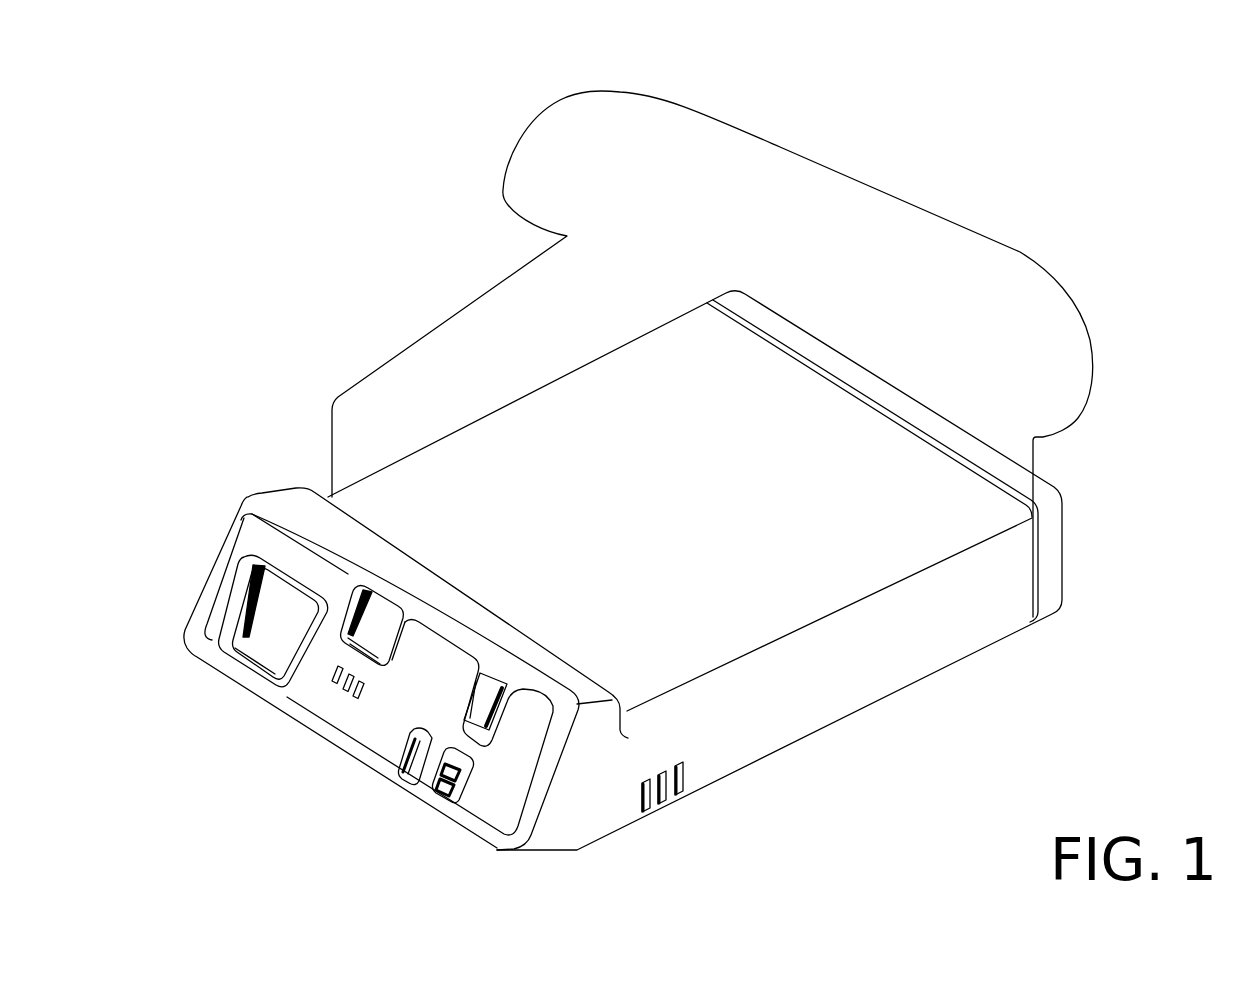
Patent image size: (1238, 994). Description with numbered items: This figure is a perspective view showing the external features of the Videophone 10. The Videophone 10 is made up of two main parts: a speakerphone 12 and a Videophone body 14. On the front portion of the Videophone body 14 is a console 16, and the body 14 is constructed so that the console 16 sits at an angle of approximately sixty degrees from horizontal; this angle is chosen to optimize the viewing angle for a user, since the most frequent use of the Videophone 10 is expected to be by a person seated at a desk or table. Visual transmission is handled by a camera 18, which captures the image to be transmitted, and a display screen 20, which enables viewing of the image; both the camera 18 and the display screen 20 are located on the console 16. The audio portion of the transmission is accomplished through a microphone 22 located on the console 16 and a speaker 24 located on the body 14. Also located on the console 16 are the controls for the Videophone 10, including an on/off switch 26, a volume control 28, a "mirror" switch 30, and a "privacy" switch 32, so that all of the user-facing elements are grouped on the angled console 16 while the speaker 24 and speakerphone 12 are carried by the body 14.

The Videophone 10 is at (874, 127).
The speakerphone 12 is at (397, 397).
The Videophone body 14 is at (990, 623).
The console 16 is at (212, 660).
The camera 18 is at (370, 628).
The display screen 20 is at (272, 618).
The microphone 22 is at (343, 688).
The speaker 24 is at (653, 805).
The on/off switch 26 is at (487, 700).
The volume control 28 is at (403, 773).
The mirror switch 30 is at (457, 778).
The privacy switch 32 is at (445, 791).